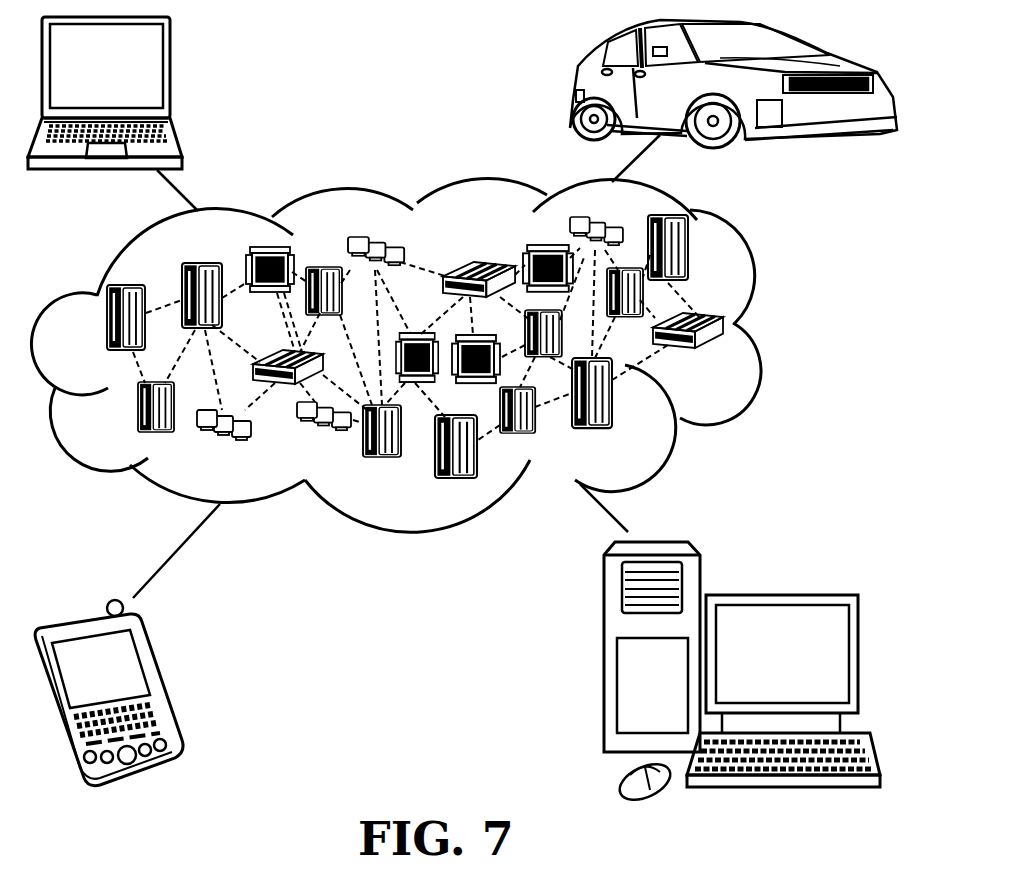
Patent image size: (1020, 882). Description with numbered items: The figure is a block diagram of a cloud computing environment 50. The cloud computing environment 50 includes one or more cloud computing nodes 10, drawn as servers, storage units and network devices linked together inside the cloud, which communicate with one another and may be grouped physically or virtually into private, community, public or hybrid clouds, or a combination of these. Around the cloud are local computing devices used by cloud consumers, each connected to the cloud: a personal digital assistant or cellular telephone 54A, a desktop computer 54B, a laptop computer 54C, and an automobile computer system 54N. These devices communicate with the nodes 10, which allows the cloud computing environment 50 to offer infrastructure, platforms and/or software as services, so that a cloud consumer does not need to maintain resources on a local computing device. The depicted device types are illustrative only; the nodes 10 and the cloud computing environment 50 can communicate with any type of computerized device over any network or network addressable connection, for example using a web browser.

The cloud computing node 10 is at (728, 357).
The cloud computing environment 50 is at (782, 327).
The personal digital assistant or cellular telephone 54A is at (160, 679).
The desktop computer 54B is at (780, 590).
The laptop computer 54C is at (171, 74).
The automobile computer system 54N is at (573, 88).